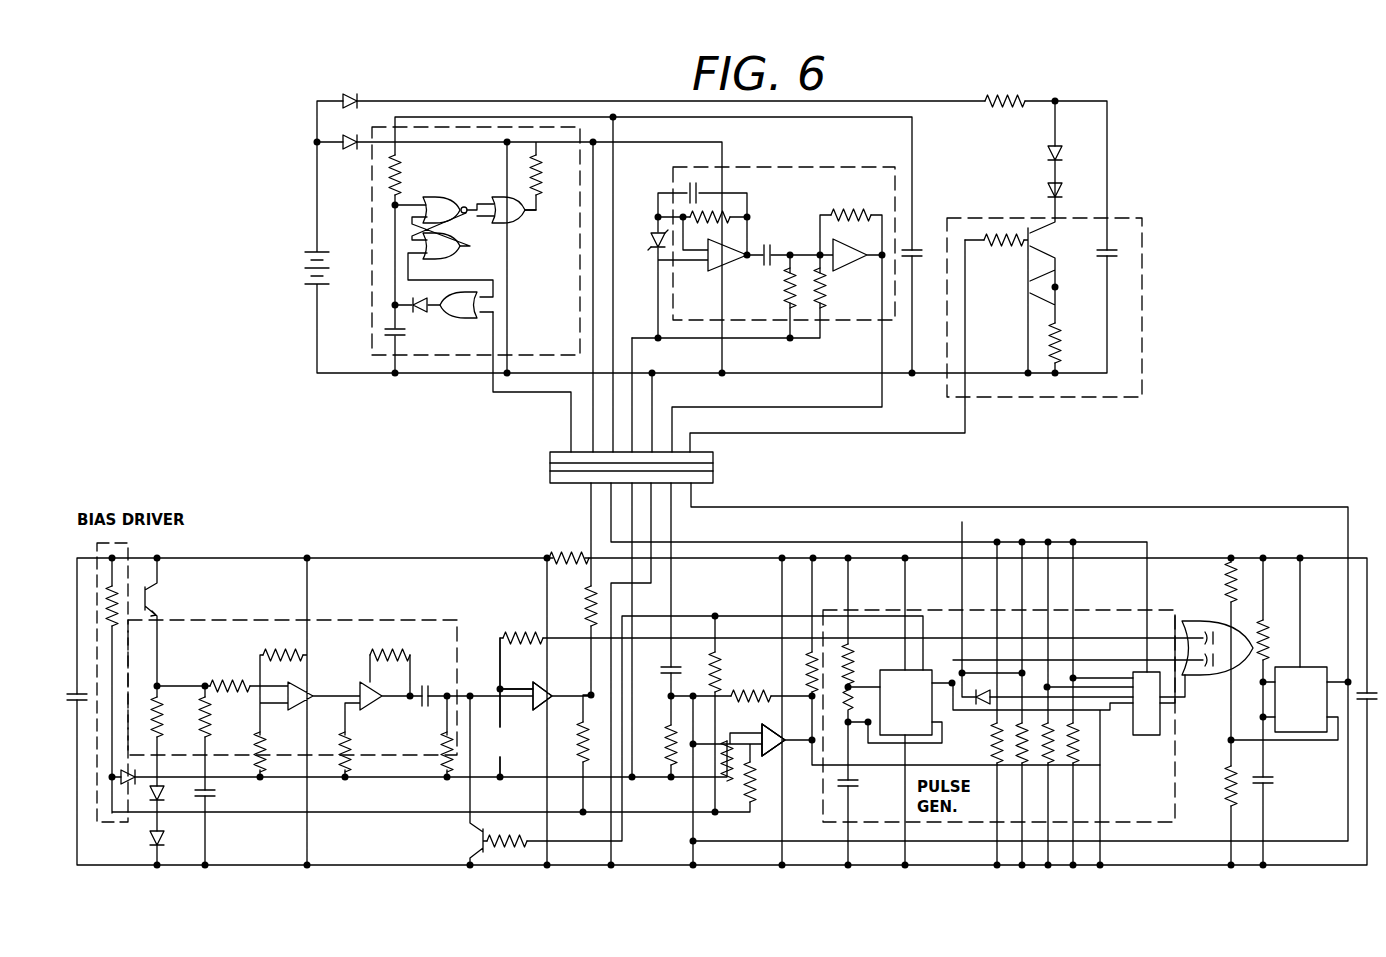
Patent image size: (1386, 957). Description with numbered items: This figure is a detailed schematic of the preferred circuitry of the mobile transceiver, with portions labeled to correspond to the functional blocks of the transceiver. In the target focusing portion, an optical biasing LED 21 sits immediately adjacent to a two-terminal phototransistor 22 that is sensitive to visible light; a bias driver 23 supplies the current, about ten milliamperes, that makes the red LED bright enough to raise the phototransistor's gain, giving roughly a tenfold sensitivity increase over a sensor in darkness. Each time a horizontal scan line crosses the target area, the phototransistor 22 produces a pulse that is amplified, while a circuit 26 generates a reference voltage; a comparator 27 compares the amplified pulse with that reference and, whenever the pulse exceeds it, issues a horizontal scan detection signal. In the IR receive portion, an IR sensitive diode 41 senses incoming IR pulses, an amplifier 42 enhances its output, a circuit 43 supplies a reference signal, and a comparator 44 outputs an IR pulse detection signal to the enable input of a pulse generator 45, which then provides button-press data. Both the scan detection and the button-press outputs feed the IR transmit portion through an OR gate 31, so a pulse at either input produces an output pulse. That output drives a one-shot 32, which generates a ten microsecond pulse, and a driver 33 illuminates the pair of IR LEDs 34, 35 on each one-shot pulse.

The optical biasing LED 21 is at (150, 838).
The phototransistor 22 is at (163, 584).
The bias driver 23 is at (128, 545).
The circuit 26 is at (498, 688).
The comparator 27 is at (545, 682).
The OR gate 31 is at (1205, 620).
The one-shot 32 is at (1317, 667).
The driver 33 is at (1044, 297).
The IR LED 34 is at (1045, 152).
The IR LED 35 is at (1045, 190).
The IR sensitive diode 41 is at (655, 248).
The amplifier 42 is at (810, 216).
The circuit 43 is at (754, 730).
The comparator 44 is at (773, 740).
The pulse generator 45 is at (1160, 795).